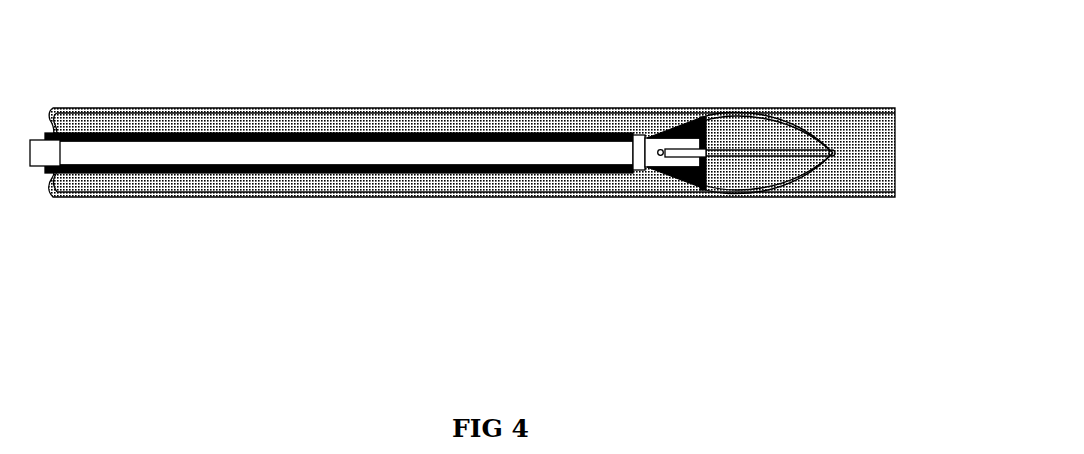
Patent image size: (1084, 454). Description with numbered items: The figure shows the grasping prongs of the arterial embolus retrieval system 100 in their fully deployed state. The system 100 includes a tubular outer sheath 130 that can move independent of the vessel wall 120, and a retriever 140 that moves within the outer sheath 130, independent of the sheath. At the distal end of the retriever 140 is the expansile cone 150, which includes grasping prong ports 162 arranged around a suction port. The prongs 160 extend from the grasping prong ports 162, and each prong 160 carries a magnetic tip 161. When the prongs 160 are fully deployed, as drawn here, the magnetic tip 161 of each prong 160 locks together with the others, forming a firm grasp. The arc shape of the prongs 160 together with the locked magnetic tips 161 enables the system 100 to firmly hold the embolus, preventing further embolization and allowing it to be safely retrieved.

The arterial embolus retrieval system 100 is at (263, 256).
The vessel wall 120 is at (118, 104).
The outer sheath 130 is at (203, 131).
The retriever 140 is at (642, 137).
The expansile cone 150 is at (651, 167).
The prongs 160 is at (743, 110).
The magnetic tip 161 is at (835, 152).
The grasping prong ports 162 is at (662, 150).